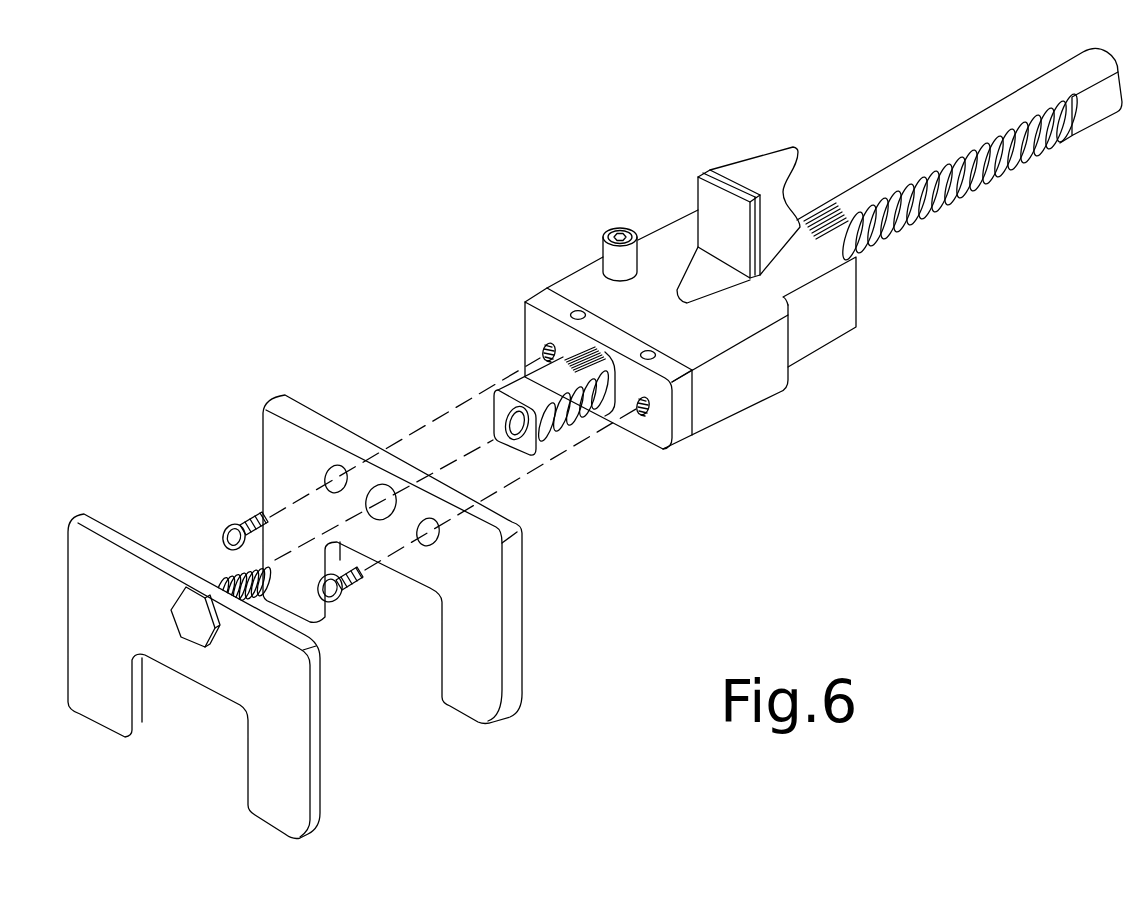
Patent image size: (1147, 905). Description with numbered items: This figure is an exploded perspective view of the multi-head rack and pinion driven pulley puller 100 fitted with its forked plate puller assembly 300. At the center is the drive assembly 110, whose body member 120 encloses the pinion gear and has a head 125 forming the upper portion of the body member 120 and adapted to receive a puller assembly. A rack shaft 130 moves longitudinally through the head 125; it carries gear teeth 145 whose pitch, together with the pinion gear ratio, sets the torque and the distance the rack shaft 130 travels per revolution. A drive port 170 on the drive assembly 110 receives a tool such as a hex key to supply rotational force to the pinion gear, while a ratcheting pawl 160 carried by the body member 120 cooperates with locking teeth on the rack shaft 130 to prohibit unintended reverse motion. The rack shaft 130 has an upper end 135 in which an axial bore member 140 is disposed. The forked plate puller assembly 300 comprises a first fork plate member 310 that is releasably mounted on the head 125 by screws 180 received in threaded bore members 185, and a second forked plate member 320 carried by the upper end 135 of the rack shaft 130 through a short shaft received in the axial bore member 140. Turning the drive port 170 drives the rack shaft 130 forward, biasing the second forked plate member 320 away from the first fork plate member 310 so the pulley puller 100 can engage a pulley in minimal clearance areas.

The multi-head rack and pinion driven pulley puller 100 is at (256, 162).
The drive assembly 110 is at (709, 239).
The body member 120 is at (643, 303).
The head 125 is at (608, 333).
The rack shaft 130 is at (959, 154).
The upper end 135 is at (557, 383).
The axial bore member 140 is at (513, 395).
The gear teeth 145 is at (947, 212).
The ratcheting pawl 160 is at (703, 273).
The drive port 170 is at (637, 237).
The screws 180 is at (227, 526).
The threaded bore members 185 is at (643, 414).
The forked plate puller assembly 300 is at (444, 505).
The first fork plate member 310 is at (278, 433).
The second forked plate member 320 is at (97, 557).